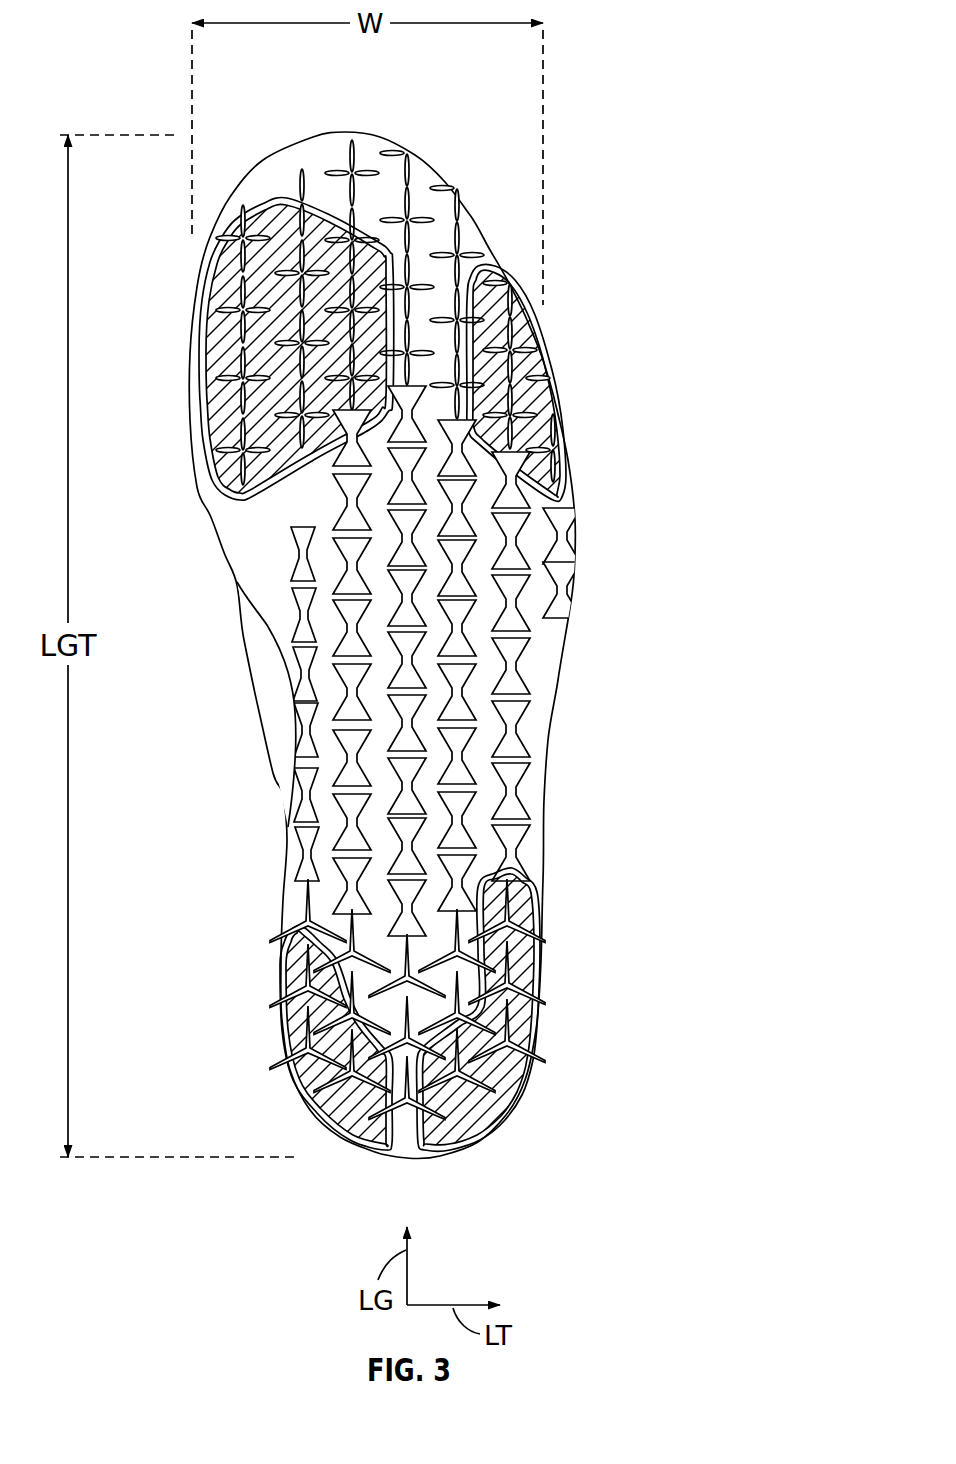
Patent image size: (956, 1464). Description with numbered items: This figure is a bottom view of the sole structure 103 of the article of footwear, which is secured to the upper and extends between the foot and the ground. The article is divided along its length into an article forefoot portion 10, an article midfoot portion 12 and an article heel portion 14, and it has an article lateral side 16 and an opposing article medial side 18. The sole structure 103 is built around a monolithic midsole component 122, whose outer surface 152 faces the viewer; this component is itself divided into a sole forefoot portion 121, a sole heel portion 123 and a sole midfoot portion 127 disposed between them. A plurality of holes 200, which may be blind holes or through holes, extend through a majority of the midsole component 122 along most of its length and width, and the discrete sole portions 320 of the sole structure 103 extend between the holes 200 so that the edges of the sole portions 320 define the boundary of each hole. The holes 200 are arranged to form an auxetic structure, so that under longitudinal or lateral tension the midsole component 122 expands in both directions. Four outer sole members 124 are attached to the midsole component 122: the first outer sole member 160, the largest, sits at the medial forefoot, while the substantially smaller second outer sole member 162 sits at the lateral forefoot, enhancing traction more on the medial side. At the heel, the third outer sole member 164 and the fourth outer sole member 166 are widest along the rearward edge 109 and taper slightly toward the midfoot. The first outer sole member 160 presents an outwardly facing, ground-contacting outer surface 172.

The article forefoot portion 10 is at (432, 147).
The article midfoot portion 12 is at (239, 715).
The article heel portion 14 is at (330, 1153).
The article lateral side 16 is at (576, 638).
The article medial side 18 is at (224, 680).
The sole structure 103 is at (611, 848).
The rearward edge 109 is at (438, 1158).
The sole forefoot portion 121 is at (455, 163).
The midsole component 122 is at (569, 723).
The sole heel portion 123 is at (516, 1118).
The outer sole members 124 is at (206, 258).
The sole midfoot portion 127 is at (564, 685).
The outer surface 152 is at (270, 608).
The first outer sole member 160 is at (206, 317).
The second outer sole member 162 is at (523, 337).
The third outer sole member 164 is at (524, 967).
The fourth outer sole member 166 is at (294, 1077).
The outer surface 172 is at (214, 405).
The holes 200 is at (519, 790).
The sole portions 320 is at (483, 818).